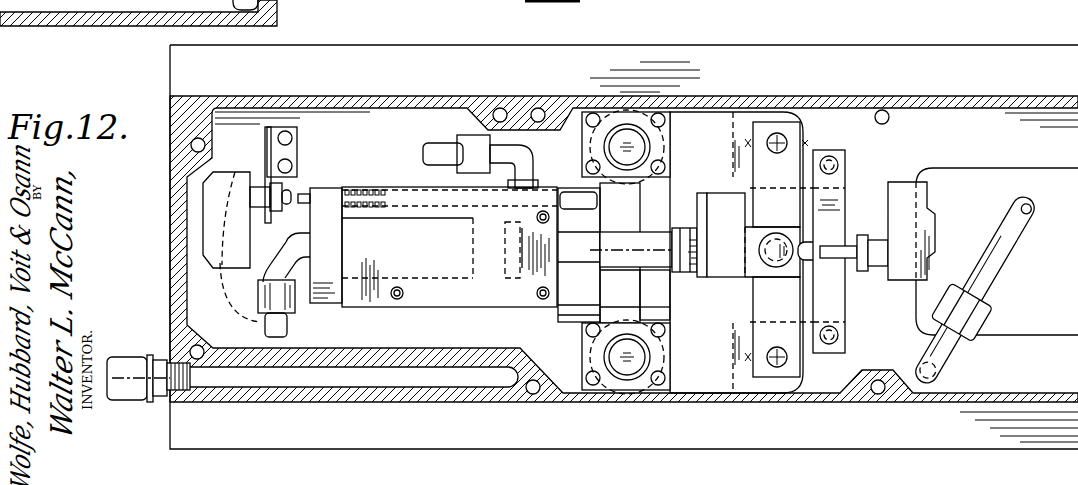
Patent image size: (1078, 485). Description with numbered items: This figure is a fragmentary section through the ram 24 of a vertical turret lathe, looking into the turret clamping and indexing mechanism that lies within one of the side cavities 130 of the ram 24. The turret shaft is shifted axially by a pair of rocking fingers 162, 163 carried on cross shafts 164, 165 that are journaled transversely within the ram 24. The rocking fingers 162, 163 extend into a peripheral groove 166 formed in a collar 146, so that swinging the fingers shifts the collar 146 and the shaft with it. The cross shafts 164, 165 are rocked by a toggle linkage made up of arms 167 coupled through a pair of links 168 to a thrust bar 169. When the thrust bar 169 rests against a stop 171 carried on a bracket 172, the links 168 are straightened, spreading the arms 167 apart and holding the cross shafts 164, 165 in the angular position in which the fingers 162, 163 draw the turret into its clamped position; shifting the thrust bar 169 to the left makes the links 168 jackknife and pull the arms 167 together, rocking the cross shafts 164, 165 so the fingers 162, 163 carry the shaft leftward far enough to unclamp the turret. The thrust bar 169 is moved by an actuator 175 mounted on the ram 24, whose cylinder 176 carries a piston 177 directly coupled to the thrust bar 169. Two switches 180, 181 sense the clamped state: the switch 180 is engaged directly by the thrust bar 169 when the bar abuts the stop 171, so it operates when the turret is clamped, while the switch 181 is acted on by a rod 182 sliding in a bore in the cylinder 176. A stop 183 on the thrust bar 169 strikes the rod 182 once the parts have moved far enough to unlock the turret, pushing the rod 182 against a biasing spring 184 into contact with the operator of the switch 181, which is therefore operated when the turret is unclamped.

The ram 24 is at (930, 75).
The side cavity 130 is at (866, 192).
The collar 146 is at (660, 308).
The rocking finger 162 is at (623, 188).
The rocking finger 163 is at (612, 318).
The cross shaft 164 is at (627, 140).
The cross shaft 165 is at (627, 363).
The peripheral groove 166 is at (607, 236).
The arm 167 is at (708, 124).
The link 168 is at (760, 210).
The thrust bar 169 is at (723, 260).
The stop 171 is at (806, 256).
The bracket 172 is at (858, 141).
The actuator 175 is at (420, 309).
The cylinder 176 is at (436, 221).
The piston 177 is at (622, 242).
The switch 180 is at (910, 216).
The switch 181 is at (254, 148).
The rod 182 is at (570, 199).
The stop 183 is at (722, 162).
The biasing spring 184 is at (368, 187).